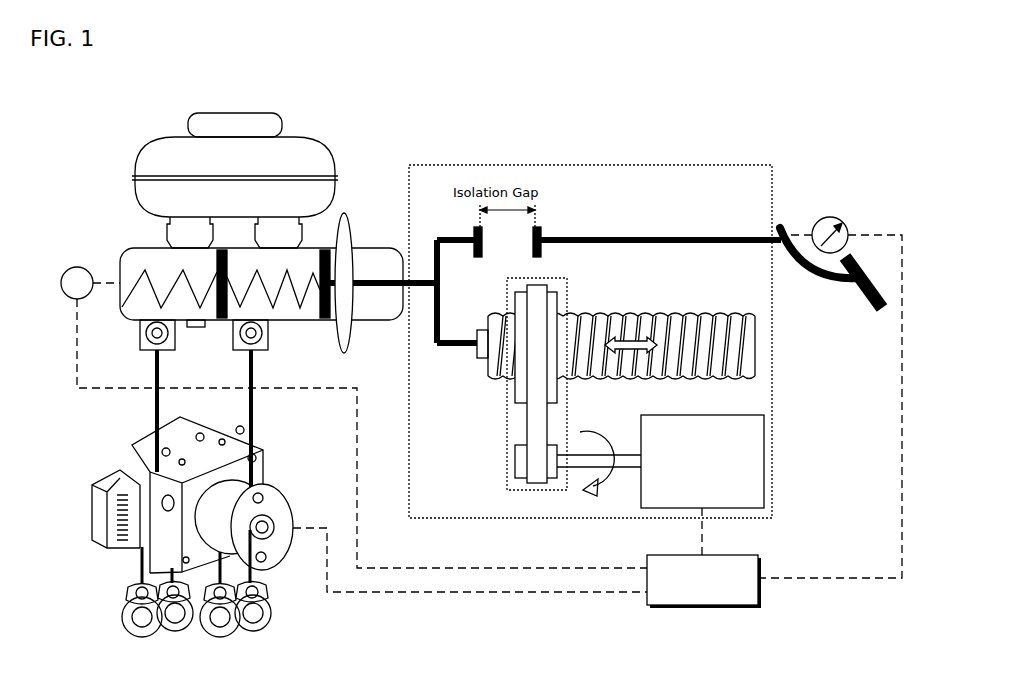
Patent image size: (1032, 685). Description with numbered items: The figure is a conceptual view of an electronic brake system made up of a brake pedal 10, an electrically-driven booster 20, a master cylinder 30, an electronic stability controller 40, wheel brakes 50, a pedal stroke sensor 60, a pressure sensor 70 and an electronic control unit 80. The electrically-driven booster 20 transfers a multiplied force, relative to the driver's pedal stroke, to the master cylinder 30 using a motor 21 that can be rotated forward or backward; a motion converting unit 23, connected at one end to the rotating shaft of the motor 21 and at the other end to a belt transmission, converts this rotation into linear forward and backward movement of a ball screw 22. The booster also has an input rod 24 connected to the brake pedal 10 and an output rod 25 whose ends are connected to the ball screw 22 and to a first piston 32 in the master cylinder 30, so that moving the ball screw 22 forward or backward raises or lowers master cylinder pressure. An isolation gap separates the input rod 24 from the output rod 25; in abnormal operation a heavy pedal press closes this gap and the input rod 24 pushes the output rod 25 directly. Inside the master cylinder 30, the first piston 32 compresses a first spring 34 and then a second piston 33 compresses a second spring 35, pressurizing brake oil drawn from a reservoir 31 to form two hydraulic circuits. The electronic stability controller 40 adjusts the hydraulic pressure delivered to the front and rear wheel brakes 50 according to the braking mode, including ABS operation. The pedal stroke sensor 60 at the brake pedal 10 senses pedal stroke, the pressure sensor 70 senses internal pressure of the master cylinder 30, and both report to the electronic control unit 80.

The brake pedal 10 is at (818, 290).
The electrically-driven booster 20 is at (614, 150).
The motor 21 is at (765, 452).
The ball screw 22 is at (684, 310).
The motion converting unit 23 is at (507, 450).
The input rod 24 is at (698, 237).
The output rod 25 is at (373, 284).
The master cylinder 30 is at (112, 315).
The reservoir 31 is at (180, 136).
The first piston 32 is at (325, 320).
The second piston 33 is at (222, 320).
The first spring 34 is at (292, 302).
The second spring 35 is at (133, 270).
The electronic stability controller (ESC) 40 is at (96, 462).
The wheel brakes 50 is at (113, 596).
The pedal stroke sensor 60 is at (830, 217).
The pressure sensor 70 is at (80, 267).
The electronic control unit (ECU) 80 is at (734, 606).